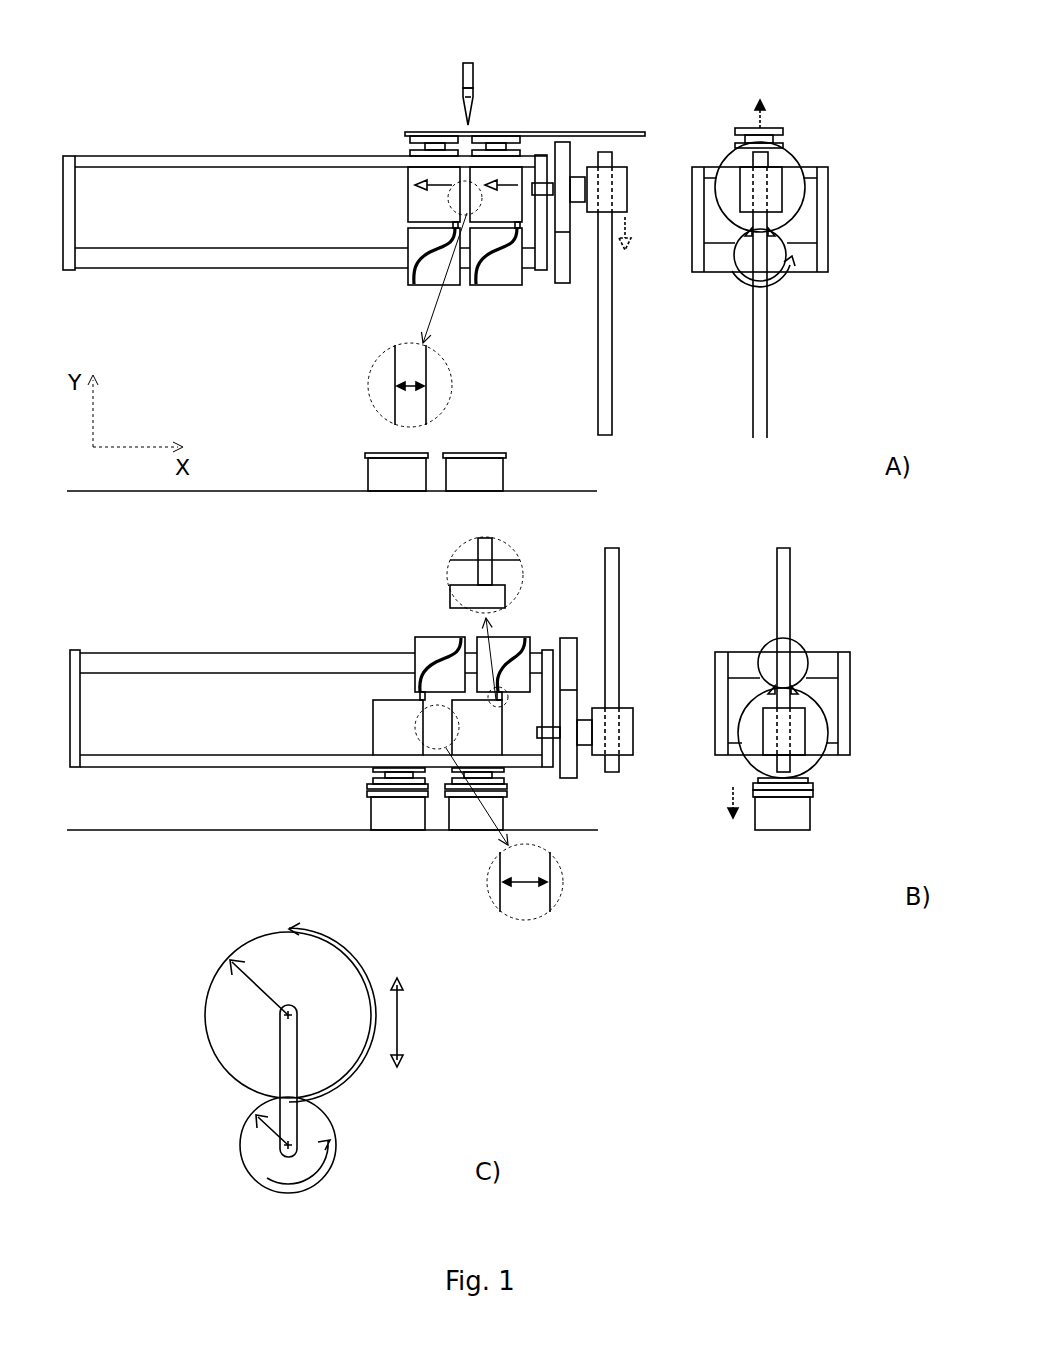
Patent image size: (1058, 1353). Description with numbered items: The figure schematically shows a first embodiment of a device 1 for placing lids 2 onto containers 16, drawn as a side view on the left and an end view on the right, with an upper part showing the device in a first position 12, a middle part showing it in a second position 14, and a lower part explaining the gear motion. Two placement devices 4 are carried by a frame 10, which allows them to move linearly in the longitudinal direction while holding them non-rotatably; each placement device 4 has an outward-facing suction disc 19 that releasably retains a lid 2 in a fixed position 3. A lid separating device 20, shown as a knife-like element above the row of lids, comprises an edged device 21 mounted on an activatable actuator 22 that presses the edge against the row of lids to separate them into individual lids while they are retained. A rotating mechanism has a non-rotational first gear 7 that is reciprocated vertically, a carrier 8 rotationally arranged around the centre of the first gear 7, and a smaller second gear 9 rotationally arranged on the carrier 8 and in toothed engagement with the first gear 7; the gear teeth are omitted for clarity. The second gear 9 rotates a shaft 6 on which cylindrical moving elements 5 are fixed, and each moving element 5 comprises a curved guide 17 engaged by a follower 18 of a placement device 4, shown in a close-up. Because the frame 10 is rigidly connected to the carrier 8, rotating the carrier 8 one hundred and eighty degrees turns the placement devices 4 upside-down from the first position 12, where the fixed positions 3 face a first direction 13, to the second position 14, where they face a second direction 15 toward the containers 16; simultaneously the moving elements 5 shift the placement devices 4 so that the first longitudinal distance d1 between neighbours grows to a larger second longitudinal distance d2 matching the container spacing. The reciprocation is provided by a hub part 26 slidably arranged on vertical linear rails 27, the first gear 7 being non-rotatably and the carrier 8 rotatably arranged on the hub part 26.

The device 1 is at (658, 92).
The lid 2 is at (487, 128).
The fixed position 3 is at (427, 133).
The placement device 4 is at (408, 183).
The moving element 5 is at (395, 278).
The shaft 6 is at (203, 268).
The first gear 7 is at (563, 150).
The carrier 8 is at (543, 273).
The second gear 9 is at (562, 277).
The frame 10 is at (233, 150).
The first position 12 is at (833, 157).
The first direction 13 is at (761, 102).
The second position 14 is at (832, 775).
The second direction 15 is at (734, 819).
The container 16 is at (360, 456).
The guide 17 is at (445, 648).
The follower 18 is at (495, 573).
The suction disc 19 is at (368, 779).
The lid separating device 20 is at (457, 80).
The edged device 21 is at (473, 107).
The activatable actuator 22 is at (480, 72).
The hub part 26 is at (627, 183).
The linear rail 27 is at (613, 370).
The first longitudinal distance d1 is at (412, 378).
The second longitudinal distance d2 is at (525, 888).